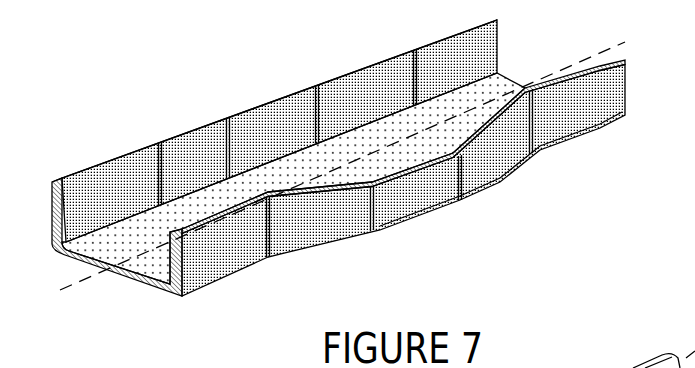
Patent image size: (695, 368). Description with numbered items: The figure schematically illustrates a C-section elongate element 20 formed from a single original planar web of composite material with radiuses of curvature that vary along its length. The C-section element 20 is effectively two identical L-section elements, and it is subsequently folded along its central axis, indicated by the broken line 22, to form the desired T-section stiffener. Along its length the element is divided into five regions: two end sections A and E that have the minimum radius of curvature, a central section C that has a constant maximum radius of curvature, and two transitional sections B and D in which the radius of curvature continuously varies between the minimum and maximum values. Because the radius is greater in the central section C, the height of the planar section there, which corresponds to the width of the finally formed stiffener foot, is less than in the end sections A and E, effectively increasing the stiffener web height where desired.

The C-section elongate element 20 is at (71, 256).
The central axis 22 is at (607, 49).
The section A is at (115, 228).
The transitional section B is at (208, 190).
The central section C is at (293, 160).
The transitional section D is at (385, 123).
The section E is at (465, 93).